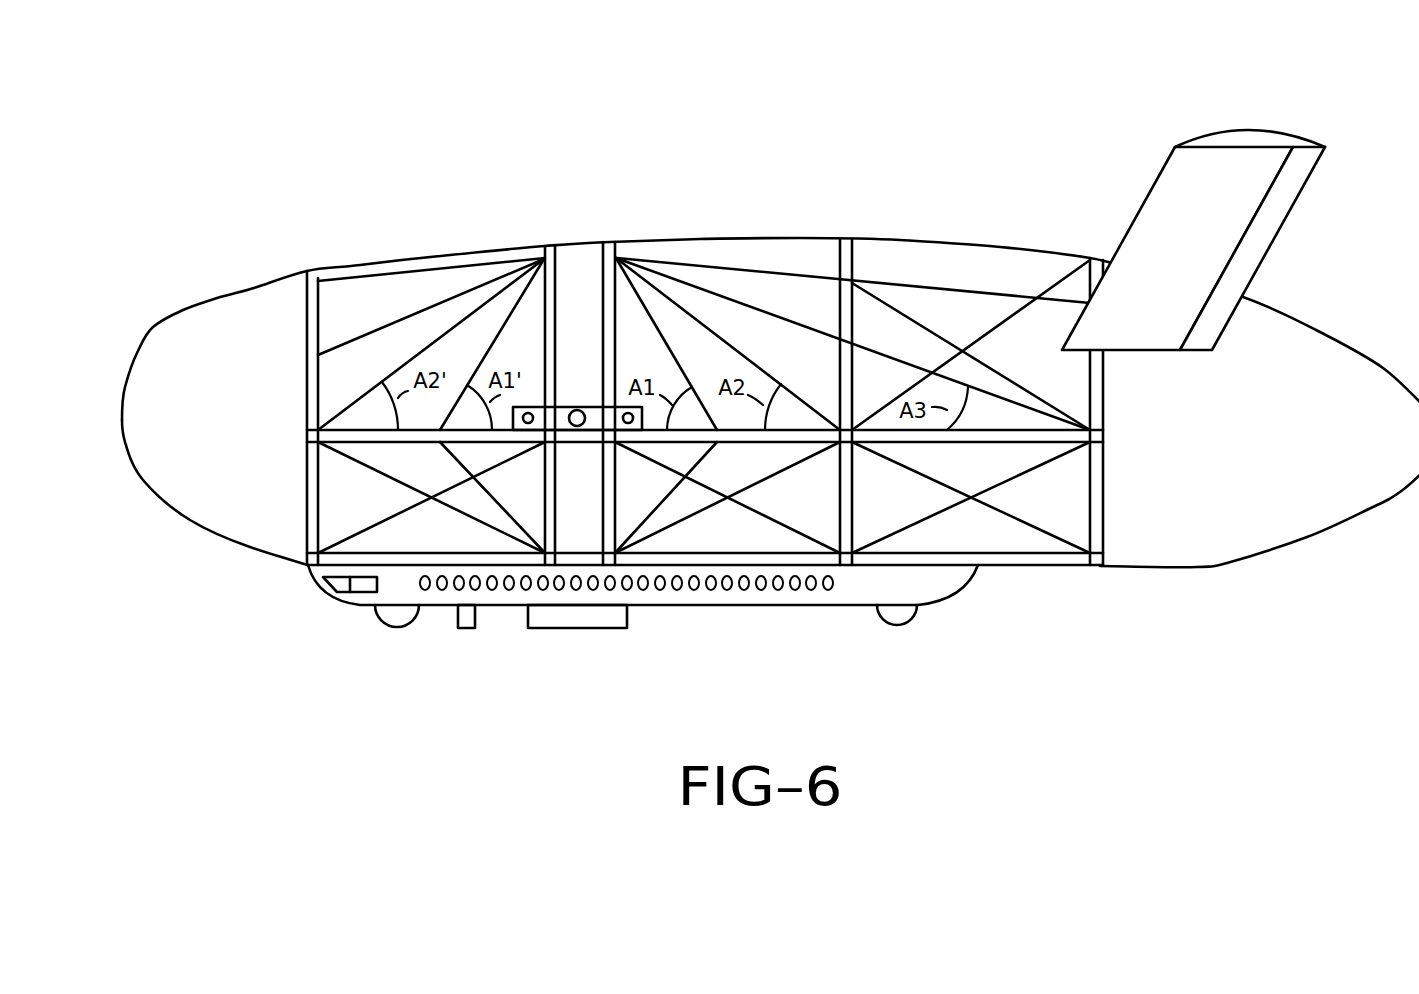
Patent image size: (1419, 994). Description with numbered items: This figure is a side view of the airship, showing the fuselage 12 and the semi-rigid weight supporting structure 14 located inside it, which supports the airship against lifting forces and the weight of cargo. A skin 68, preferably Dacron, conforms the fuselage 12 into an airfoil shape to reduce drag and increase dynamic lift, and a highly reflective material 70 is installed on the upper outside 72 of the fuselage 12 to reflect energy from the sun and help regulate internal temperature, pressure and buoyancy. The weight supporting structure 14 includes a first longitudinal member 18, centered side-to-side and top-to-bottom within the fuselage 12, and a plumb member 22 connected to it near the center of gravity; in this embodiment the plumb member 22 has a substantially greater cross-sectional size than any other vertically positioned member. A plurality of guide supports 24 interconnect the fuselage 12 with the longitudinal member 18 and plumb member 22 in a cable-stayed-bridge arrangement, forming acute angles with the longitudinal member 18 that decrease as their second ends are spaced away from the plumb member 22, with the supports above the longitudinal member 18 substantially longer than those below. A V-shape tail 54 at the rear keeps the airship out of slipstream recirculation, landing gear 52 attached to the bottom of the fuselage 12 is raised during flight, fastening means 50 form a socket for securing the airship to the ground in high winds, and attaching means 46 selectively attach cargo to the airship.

The fuselage 12 is at (190, 520).
The weight supporting structure 14 is at (847, 555).
The first longitudinal member 18 is at (505, 433).
The plumb member 22 is at (575, 282).
The guide supports 24 is at (780, 317).
The attaching means 46 is at (627, 628).
The fastening means 50 is at (475, 627).
The landing gear 52 is at (387, 622).
The V-shape tail 54 is at (1247, 130).
The skin 68 is at (255, 287).
The highly reflective material 70 is at (505, 248).
The upper outside 72 is at (362, 267).